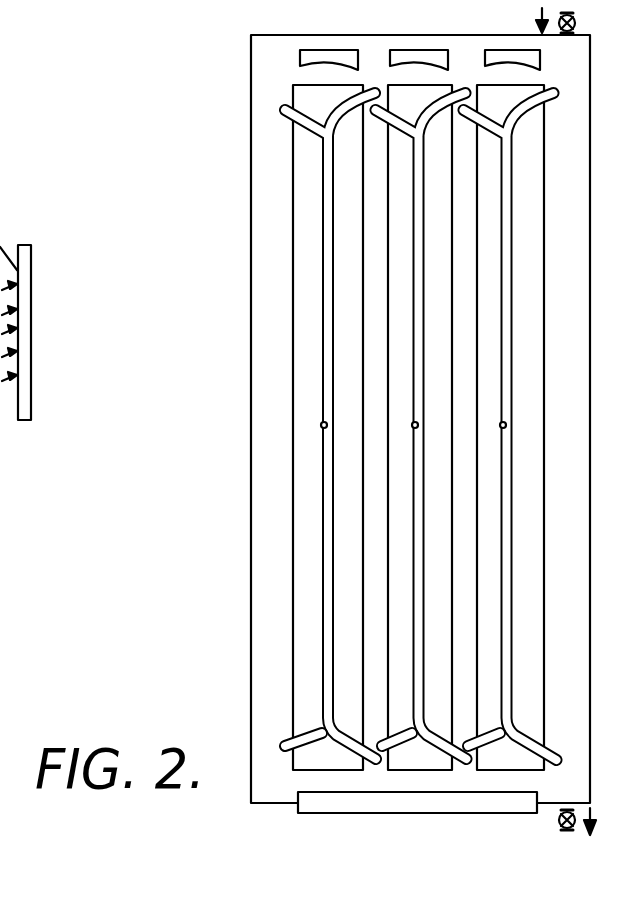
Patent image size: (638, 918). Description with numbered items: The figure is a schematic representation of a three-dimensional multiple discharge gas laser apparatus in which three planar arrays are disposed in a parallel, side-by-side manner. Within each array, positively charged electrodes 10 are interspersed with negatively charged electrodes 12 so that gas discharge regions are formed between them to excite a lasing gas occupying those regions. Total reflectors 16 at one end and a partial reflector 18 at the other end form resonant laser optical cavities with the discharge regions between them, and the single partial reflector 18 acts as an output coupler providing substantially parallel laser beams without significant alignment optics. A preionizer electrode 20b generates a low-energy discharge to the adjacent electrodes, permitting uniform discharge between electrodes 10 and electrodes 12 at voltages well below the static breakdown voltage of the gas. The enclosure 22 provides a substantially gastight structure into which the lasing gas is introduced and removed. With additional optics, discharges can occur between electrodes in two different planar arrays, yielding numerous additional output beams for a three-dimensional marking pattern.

The positively charged electrodes 10 is at (470, 128).
The negatively charged electrodes 12 is at (292, 738).
The total reflectors 16 is at (300, 61).
The partial reflector 18 is at (298, 812).
The preionizer electrode 20b is at (478, 540).
The enclosure 22 is at (250, 316).